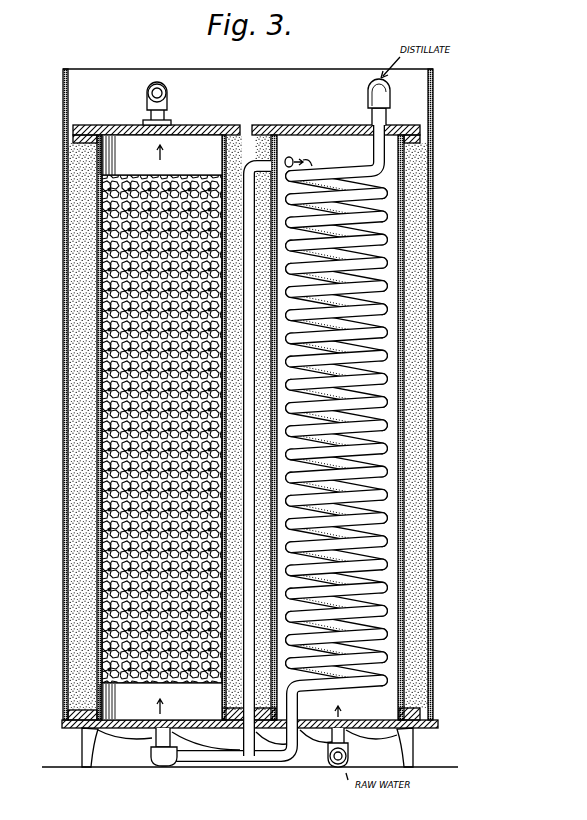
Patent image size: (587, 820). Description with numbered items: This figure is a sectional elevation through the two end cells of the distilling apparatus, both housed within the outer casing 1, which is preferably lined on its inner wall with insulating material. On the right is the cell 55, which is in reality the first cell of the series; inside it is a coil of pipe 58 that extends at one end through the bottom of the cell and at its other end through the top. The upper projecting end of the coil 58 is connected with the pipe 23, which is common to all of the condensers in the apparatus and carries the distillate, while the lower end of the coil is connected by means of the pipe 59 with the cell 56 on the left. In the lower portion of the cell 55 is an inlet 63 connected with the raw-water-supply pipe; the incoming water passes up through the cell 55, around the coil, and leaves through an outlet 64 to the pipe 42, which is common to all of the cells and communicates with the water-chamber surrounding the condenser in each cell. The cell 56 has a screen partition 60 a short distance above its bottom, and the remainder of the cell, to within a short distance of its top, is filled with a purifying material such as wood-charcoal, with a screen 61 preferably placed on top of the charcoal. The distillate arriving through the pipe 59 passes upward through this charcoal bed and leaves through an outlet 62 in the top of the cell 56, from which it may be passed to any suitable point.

The outer casing 1 is at (472, 554).
The pipe 23 is at (368, 90).
The pipe 42 is at (247, 766).
The cell 55 is at (392, 302).
The cell 56 is at (102, 294).
The coil of pipe 58 is at (390, 420).
The pipe 59 is at (217, 758).
The screen partition 60 is at (211, 682).
The screen 61 is at (178, 178).
The outlet 62 is at (167, 120).
The inlet 63 is at (350, 752).
The outlet 64 is at (294, 160).